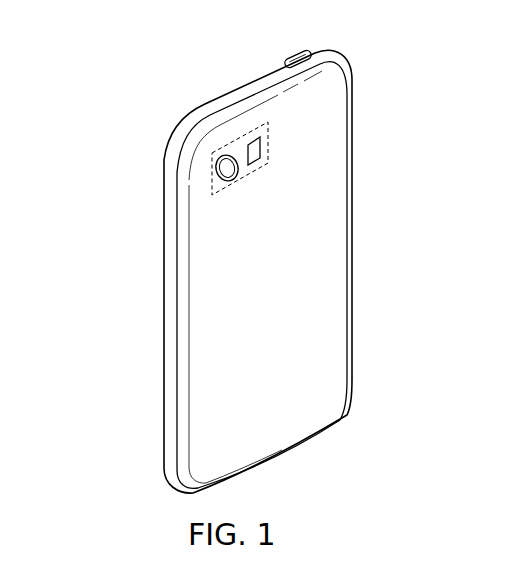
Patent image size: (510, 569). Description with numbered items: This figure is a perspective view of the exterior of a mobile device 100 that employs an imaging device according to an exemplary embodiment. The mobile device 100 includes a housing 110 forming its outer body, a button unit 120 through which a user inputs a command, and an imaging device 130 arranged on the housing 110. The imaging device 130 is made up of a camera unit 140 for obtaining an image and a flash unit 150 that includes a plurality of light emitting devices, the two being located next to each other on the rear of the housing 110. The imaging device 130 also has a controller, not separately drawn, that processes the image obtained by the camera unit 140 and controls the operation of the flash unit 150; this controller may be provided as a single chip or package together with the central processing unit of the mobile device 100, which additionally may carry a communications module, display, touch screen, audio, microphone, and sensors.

The mobile device 100 is at (118, 79).
The housing 110 is at (345, 232).
The button unit 120 is at (292, 55).
The imaging device 130 is at (216, 174).
The camera unit 140 is at (219, 190).
The flash unit 150 is at (257, 148).